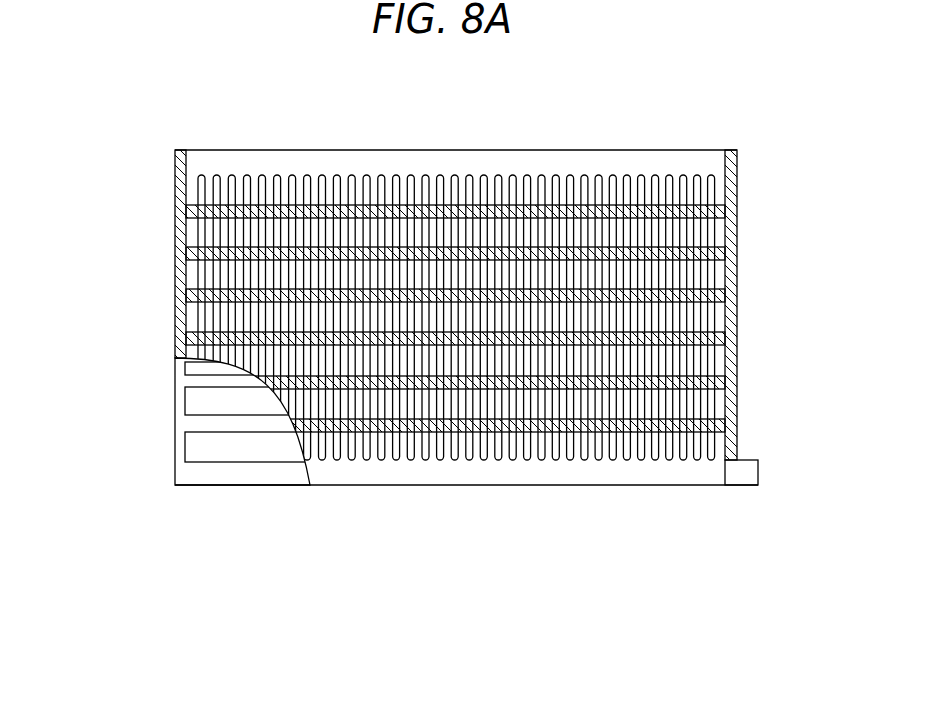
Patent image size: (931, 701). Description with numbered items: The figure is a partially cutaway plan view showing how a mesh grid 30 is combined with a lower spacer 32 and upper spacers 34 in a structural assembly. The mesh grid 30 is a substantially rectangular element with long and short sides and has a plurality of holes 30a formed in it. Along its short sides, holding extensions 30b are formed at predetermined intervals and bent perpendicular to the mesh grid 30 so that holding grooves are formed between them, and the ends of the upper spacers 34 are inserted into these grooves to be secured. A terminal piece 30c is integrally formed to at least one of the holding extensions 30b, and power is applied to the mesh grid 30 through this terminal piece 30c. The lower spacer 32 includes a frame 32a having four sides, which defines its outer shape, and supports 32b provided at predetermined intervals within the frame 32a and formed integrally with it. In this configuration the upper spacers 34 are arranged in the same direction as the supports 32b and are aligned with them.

The mesh grid 30 is at (628, 162).
The holes 30a is at (202, 186).
The holding extensions 30b is at (737, 363).
The terminal piece 30c is at (758, 473).
The lower spacer 32 is at (174, 457).
The frame 32a is at (232, 479).
The supports 32b is at (200, 422).
The upper spacers 34 is at (325, 216).